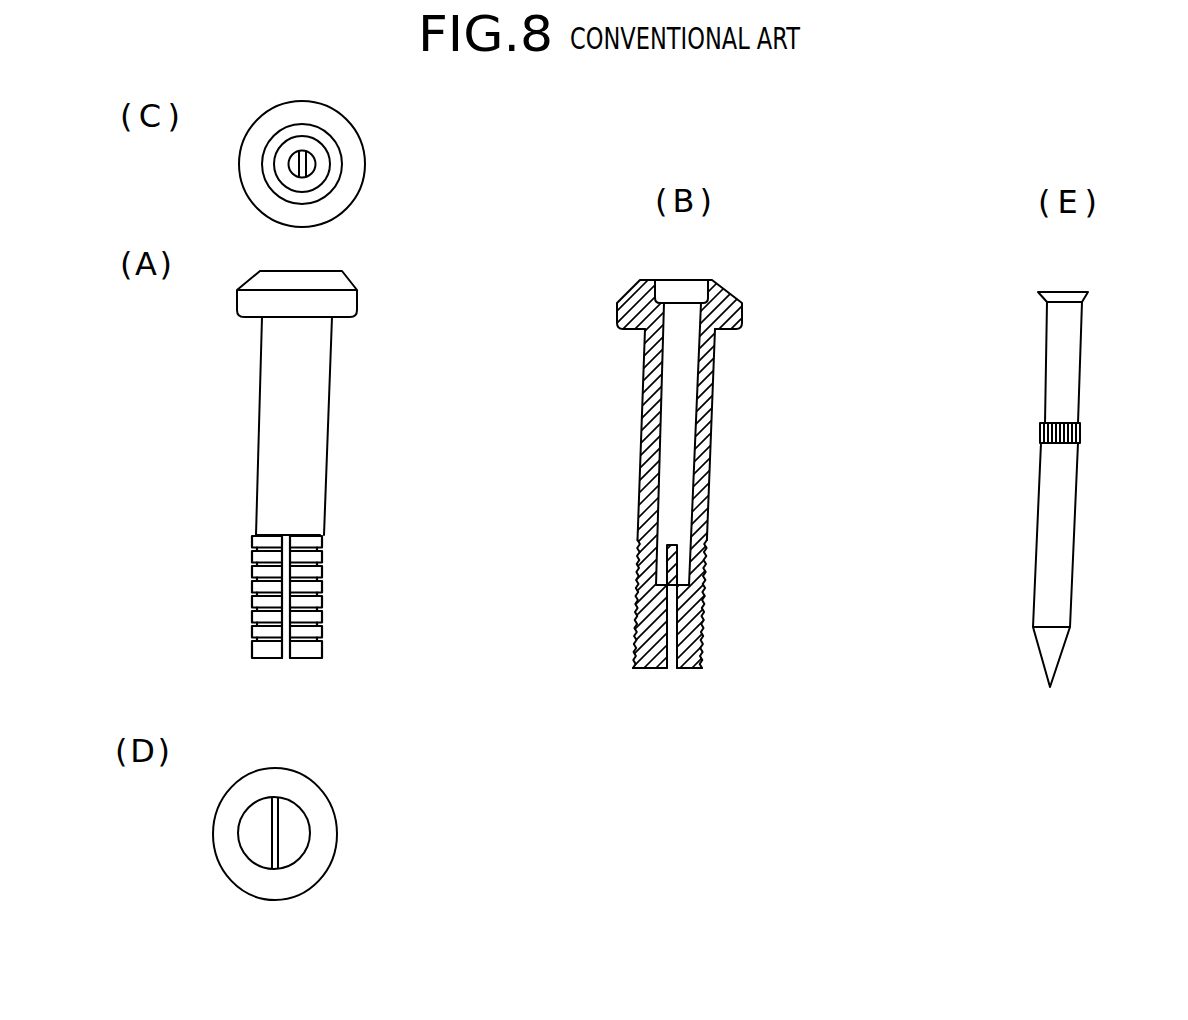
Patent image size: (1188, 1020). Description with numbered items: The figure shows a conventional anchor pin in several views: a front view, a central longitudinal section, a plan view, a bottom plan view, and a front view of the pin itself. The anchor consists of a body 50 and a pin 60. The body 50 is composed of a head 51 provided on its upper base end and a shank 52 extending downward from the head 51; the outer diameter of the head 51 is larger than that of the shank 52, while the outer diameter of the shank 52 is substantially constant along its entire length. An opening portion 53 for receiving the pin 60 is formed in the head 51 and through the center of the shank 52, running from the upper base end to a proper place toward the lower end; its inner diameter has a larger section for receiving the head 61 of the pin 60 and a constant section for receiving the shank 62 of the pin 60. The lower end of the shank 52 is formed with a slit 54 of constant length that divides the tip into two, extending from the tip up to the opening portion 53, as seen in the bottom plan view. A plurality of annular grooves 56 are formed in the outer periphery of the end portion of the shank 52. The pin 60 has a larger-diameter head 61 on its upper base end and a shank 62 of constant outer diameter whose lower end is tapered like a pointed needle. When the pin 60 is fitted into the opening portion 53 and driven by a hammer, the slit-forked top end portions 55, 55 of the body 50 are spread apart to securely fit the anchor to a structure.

The body 50 is at (650, 544).
The head 51 is at (268, 302).
The shank 52 is at (310, 428).
The opening portion 53 is at (680, 410).
The slit 54 is at (300, 622).
The slit-forked top end portions 55 is at (648, 650).
The annular grooves 56 is at (320, 534).
The pin 60 is at (1107, 442).
The head 61 is at (1068, 298).
The shank 62 is at (1065, 382).